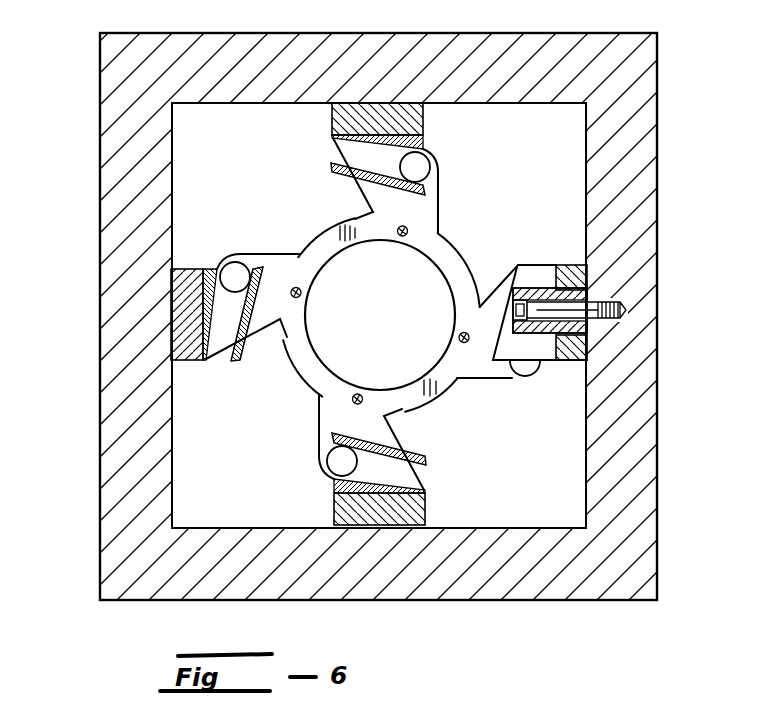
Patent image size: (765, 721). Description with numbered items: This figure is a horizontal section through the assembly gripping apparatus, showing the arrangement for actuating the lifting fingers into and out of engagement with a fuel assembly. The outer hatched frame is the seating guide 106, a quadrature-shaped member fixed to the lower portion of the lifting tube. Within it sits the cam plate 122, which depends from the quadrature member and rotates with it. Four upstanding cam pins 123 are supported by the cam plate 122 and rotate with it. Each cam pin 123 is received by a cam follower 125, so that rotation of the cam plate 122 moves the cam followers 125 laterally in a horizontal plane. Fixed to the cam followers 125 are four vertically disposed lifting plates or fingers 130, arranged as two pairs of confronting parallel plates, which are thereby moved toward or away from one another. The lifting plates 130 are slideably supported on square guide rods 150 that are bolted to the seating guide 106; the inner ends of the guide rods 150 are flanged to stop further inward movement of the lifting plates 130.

The seating guide 106 is at (102, 326).
The cam plate 122 is at (313, 243).
The cam pins 123 is at (421, 164).
The cam followers 125 is at (332, 149).
The lifting plates or fingers 130 is at (416, 122).
The square guide rods 150 is at (518, 267).